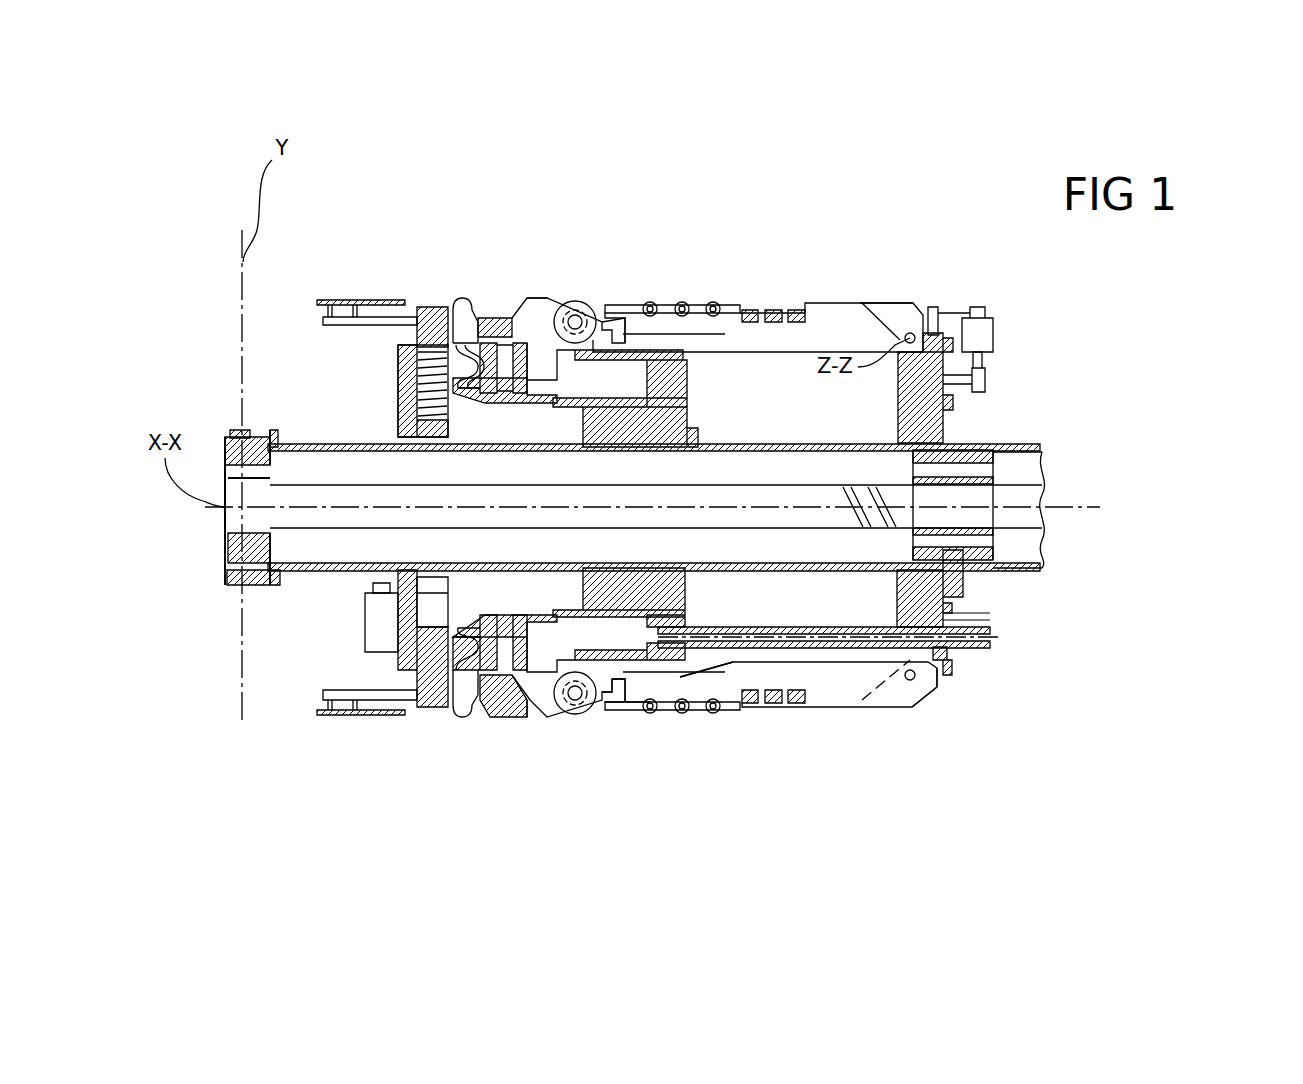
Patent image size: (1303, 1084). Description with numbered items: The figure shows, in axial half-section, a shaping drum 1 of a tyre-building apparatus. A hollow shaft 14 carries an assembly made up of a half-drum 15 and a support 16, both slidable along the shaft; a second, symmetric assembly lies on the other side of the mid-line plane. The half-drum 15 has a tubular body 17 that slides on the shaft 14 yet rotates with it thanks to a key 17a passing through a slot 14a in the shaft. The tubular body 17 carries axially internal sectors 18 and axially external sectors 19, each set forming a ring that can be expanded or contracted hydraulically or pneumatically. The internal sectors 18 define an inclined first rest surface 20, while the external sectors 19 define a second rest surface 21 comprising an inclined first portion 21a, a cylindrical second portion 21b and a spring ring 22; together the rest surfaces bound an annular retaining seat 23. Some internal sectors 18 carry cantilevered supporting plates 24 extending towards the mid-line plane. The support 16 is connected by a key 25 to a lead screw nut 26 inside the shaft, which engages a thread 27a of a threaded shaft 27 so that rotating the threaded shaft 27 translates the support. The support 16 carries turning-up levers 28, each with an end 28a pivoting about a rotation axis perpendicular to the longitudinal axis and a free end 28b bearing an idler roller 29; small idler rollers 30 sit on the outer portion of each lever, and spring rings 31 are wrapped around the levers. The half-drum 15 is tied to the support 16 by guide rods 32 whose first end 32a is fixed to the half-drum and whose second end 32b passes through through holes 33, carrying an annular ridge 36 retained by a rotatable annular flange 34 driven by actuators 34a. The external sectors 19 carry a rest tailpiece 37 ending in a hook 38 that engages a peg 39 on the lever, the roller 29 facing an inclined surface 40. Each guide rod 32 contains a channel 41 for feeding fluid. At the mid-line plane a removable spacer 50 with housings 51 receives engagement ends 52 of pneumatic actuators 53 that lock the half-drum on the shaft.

The shaping drum 1 is at (203, 265).
The hollow shaft 14 is at (1027, 437).
The slot 14a is at (747, 443).
The half-drum 15 is at (560, 250).
The support 16 is at (933, 283).
The tubular body 17 is at (687, 417).
The key 17a is at (717, 583).
The axially internal sectors 18 is at (455, 305).
The axially external sectors 19 is at (520, 308).
The first rest surface 20 is at (477, 300).
The second rest surface 21 is at (507, 308).
The first portion 21a is at (530, 287).
The second portion 21b is at (503, 305).
The spring ring 22 is at (540, 303).
The annular retaining seat 23 is at (487, 707).
The supporting plates 24 is at (355, 298).
The key 25 is at (963, 587).
The lead screw nut 26 is at (980, 457).
The threaded shaft 27 is at (317, 530).
The thread 27a is at (877, 527).
The turning-up lever 28 is at (812, 293).
The end 28a is at (880, 307).
The free end 28b is at (618, 307).
The idler roller 29 is at (605, 307).
The small idler rollers 30 is at (717, 305).
The spring rings 31 is at (797, 310).
The guide rod 32 is at (818, 660).
The first end 32a is at (680, 670).
The second end 32b is at (972, 648).
The through holes 33 is at (920, 630).
The annular flange 34 is at (983, 365).
The actuators 34a is at (997, 315).
The annular ridge 36 is at (960, 623).
The rest tailpiece 37 is at (600, 700).
The hook 38 is at (607, 700).
The peg 39 is at (640, 703).
The inclined surface 40 is at (543, 705).
The channel 41 is at (857, 640).
The spacer 50 is at (285, 413).
The housings 51 is at (268, 423).
The engagement ends 52 is at (373, 590).
The actuators 53 is at (373, 630).